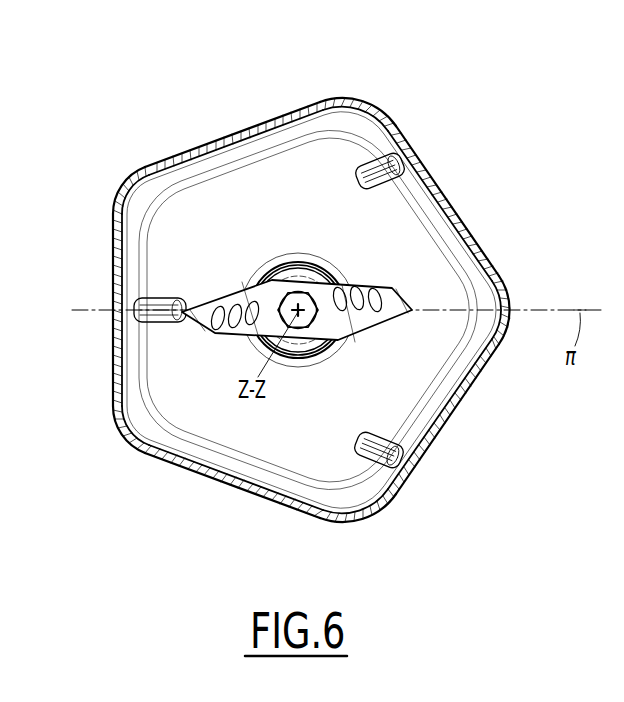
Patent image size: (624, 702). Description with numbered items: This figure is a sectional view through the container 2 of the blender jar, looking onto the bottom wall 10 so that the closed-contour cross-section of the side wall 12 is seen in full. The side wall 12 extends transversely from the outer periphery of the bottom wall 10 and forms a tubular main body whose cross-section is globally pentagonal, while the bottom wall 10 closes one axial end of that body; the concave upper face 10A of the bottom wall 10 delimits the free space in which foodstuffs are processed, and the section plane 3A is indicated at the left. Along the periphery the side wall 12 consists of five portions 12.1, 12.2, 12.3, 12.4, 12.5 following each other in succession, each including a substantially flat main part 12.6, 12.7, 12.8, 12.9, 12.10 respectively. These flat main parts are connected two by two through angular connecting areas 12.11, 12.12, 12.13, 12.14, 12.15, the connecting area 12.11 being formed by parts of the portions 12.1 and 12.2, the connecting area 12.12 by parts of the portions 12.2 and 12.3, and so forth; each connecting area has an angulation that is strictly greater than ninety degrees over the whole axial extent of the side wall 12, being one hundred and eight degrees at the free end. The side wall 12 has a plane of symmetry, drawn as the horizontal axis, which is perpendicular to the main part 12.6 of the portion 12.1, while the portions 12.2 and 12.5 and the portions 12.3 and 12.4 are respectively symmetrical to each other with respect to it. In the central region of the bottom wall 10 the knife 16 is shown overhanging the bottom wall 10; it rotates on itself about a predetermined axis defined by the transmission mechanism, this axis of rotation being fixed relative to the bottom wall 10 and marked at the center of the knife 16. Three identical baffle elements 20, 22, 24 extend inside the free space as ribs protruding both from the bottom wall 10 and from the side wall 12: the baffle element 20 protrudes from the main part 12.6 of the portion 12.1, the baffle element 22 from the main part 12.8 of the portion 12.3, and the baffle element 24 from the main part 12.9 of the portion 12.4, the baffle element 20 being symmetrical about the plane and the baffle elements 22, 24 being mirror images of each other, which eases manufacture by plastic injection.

The container 2 is at (181, 484).
The section plane 3A is at (11, 214).
The bottom wall 10 is at (198, 386).
The upper face 10A is at (265, 438).
The side wall 12 is at (98, 370).
The first portion of the side wall 12.1 is at (68, 160).
The second portion of the side wall 12.2 is at (372, 70).
The third portion of the side wall 12.3 is at (382, 66).
The fourth portion of the side wall 12.4 is at (557, 310).
The fifth portion of the side wall 12.5 is at (372, 553).
The main part of the first portion 12.6 is at (118, 270).
The main part of the second portion 12.7 is at (272, 126).
The main part of the third portion 12.8 is at (480, 242).
The main part of the fourth portion 12.9 is at (474, 388).
The main part of the fifth portion 12.10 is at (305, 512).
The connecting area 12.11 is at (132, 186).
The connecting area 12.12 is at (372, 110).
The connecting area 12.13 is at (510, 284).
The connecting area 12.14 is at (366, 512).
The connecting area 12.15 is at (127, 452).
The knife 16 is at (398, 316).
The baffle element 20 is at (170, 294).
The baffle element 22 is at (362, 178).
The baffle element 24 is at (373, 440).